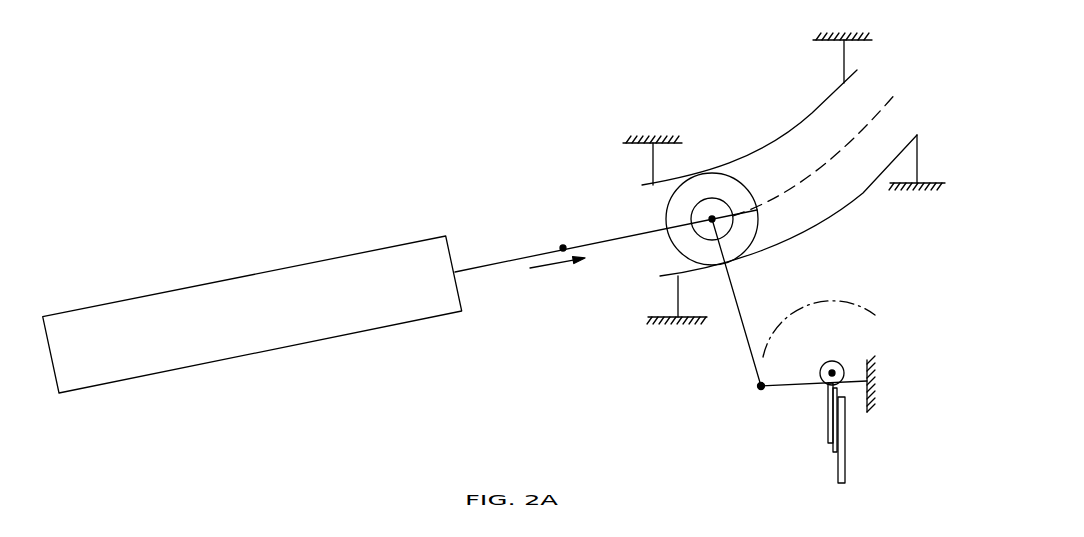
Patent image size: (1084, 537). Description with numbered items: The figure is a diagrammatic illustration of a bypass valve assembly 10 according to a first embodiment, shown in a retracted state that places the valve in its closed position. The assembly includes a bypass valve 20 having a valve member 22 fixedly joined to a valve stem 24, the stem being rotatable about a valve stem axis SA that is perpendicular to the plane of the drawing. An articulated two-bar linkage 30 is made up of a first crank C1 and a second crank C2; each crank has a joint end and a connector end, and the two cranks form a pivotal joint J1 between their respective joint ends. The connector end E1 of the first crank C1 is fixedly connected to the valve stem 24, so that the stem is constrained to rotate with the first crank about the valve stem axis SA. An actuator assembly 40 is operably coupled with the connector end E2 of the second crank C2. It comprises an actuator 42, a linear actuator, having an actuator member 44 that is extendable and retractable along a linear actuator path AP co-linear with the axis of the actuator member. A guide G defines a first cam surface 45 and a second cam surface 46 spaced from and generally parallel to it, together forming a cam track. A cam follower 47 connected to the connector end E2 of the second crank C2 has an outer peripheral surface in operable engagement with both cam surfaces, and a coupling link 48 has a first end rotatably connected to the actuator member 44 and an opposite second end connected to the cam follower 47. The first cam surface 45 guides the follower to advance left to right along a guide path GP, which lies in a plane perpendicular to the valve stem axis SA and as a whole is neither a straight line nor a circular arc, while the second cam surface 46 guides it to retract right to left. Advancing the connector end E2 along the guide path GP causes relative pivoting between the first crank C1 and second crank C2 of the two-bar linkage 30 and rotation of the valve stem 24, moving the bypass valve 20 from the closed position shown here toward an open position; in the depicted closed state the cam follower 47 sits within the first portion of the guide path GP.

The bypass valve assembly 10 is at (392, 130).
The actuator assembly 40 is at (447, 221).
The actuator 42 is at (222, 292).
The actuator member 44 is at (505, 258).
The coupling link 48 is at (627, 237).
The second cam surface 46 is at (822, 119).
The cam follower 47 is at (740, 180).
The guide path GP is at (817, 170).
The actuator path AP is at (806, 200).
The guide G is at (860, 206).
The first cam surface 45 is at (804, 226).
The connector end of the second crank E2 is at (697, 256).
The second crank C2 is at (738, 311).
The two-bar linkage 30 is at (742, 370).
The pivotal joint J1 is at (760, 394).
The first crank C1 is at (792, 388).
The connector end of the first crank E1 is at (828, 386).
The valve stem axis SA is at (830, 362).
The valve stem 24 is at (836, 361).
The bypass valve 20 is at (803, 453).
The valve member 22 is at (845, 475).